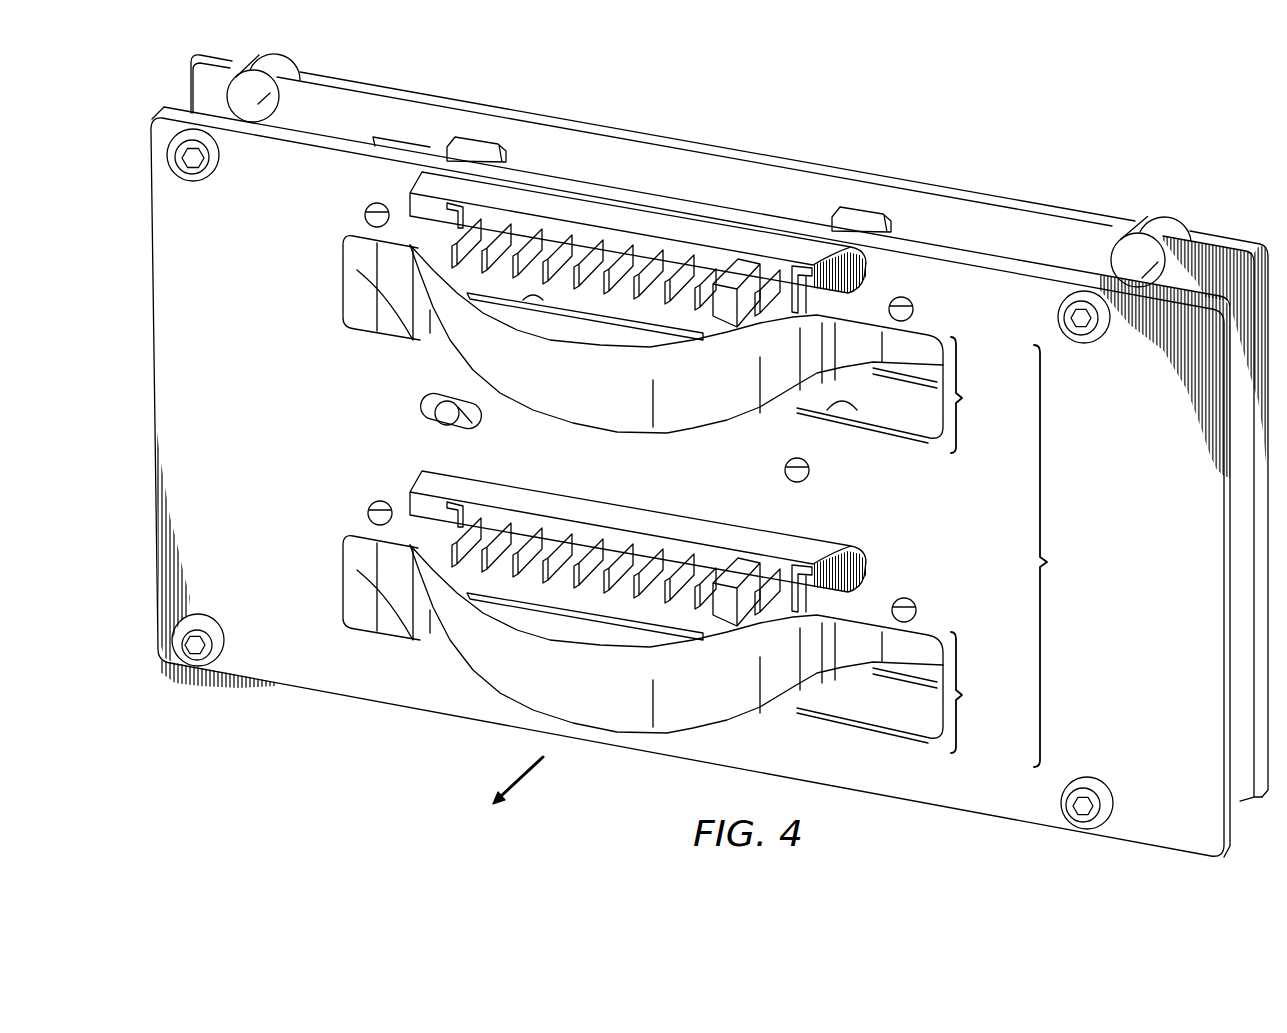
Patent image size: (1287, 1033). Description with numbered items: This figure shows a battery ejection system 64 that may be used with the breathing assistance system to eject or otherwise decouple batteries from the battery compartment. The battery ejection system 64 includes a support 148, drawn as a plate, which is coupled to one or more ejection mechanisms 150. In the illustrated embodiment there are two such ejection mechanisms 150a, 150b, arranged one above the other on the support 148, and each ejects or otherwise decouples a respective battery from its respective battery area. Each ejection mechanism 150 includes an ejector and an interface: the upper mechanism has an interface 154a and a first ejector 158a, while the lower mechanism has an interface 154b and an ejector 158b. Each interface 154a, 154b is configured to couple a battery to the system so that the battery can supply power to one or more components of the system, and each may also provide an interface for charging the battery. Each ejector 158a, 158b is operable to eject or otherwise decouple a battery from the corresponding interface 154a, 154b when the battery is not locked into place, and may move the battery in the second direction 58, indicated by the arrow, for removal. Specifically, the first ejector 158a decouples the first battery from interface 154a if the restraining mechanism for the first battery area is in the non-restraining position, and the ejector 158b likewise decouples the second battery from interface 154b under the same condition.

The support 148 is at (620, 148).
The battery ejection system 64 is at (852, 108).
The interface 154a is at (413, 203).
The interface 154b is at (413, 502).
The first ejector 158a is at (597, 397).
The ejector 158b is at (597, 696).
The ejection mechanism 150a is at (985, 395).
The ejection mechanism 150b is at (985, 692).
The ejection mechanisms 150 is at (1062, 556).
The second direction 58 is at (528, 773).